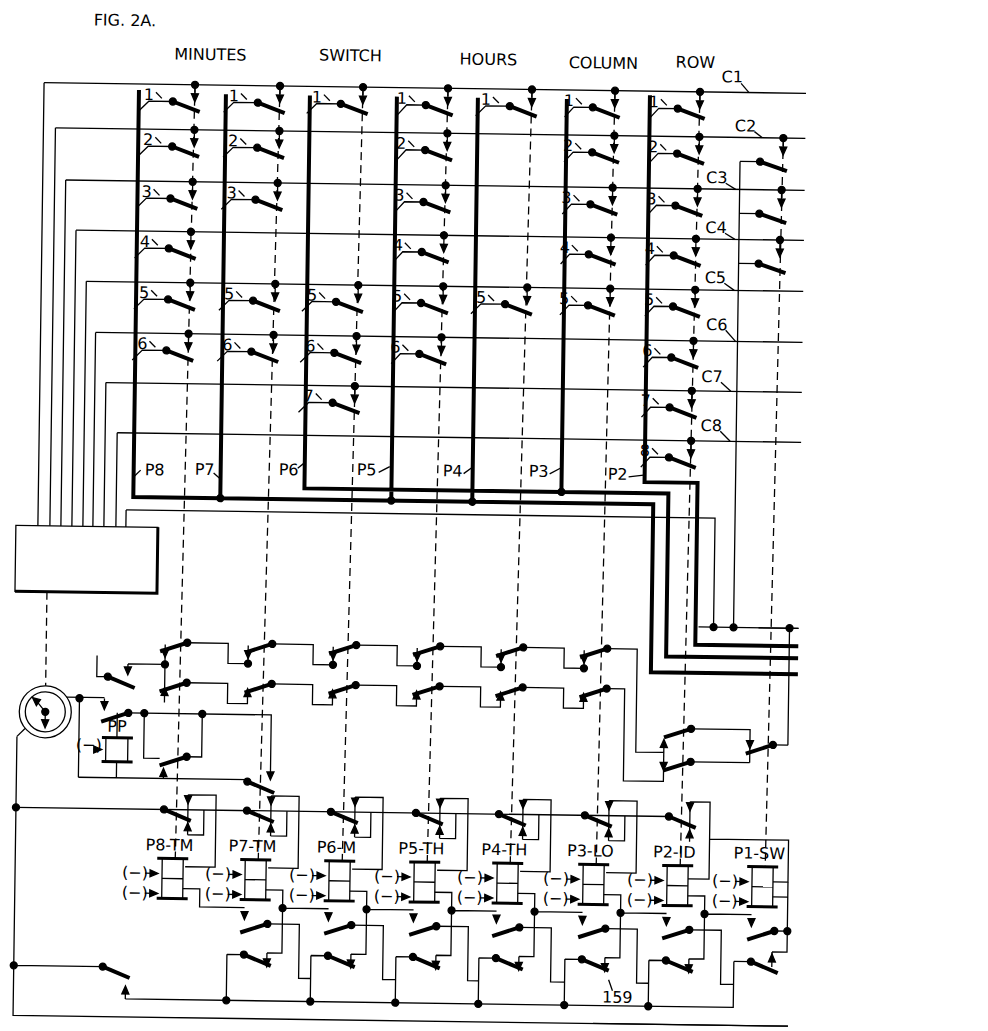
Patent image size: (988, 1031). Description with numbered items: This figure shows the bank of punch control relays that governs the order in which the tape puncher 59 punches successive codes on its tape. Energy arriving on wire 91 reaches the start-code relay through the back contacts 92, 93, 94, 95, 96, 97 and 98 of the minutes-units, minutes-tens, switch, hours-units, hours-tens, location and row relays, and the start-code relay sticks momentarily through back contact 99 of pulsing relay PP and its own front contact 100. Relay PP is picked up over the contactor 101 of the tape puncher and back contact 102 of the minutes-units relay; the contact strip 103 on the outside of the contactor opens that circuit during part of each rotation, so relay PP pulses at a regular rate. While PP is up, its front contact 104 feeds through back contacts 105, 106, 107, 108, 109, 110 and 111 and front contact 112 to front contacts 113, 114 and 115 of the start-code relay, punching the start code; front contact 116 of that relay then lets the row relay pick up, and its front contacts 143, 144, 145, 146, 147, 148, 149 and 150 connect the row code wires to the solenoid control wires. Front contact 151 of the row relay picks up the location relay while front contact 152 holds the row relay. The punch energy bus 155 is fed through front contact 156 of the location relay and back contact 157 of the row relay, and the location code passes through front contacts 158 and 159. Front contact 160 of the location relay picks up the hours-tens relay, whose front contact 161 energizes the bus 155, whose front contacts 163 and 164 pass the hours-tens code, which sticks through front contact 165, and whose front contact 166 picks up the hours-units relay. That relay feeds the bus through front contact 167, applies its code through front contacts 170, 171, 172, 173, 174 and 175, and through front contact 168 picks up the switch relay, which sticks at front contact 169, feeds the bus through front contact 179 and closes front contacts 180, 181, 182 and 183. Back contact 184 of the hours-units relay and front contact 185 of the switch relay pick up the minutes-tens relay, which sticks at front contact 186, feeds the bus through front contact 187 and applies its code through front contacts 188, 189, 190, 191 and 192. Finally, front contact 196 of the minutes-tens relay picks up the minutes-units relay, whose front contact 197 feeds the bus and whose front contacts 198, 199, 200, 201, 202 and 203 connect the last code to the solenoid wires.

The tape puncher 59 is at (140, 598).
The wire 91 is at (735, 1021).
The contact of relay P8-TM 92 is at (166, 810).
The contact of relay P7-TM 93 is at (249, 810).
The contact of relay P6-M 94 is at (333, 810).
The contact of relay P5-TH 95 is at (418, 810).
The contact of relay P4-TH 96 is at (501, 810).
The contact of relay P3-LO 97 is at (587, 810).
The contact of relay P2-ID 98 is at (671, 810).
The back contact of relay PP 99 is at (123, 977).
The front contact of relay P1-SW 100 is at (779, 979).
The contactor of the tape puncher 101 is at (52, 742).
The back contact of relay P8-TM 102 is at (194, 763).
The contact strip 103 is at (40, 696).
The front contact of relay PP 104 is at (116, 677).
The back contact of relay P8-TM 105 is at (191, 641).
The back contact of relay P7-TM 106 is at (276, 641).
The back contact of relay P6-M 107 is at (360, 641).
The back contact of relay P5-TH 108 is at (444, 641).
The back contact of relay P4-TH 109 is at (527, 641).
The back contact of relay P3-LO 110 is at (611, 641).
The back contact of relay P2-ID 111 is at (694, 721).
The contact of relay P1-SW 112 is at (778, 748).
The front contact of relay P1-SW 113 is at (767, 168).
The front contact of relay P1-SW 114 is at (767, 220).
The front contact of relay P1-SW 115 is at (767, 270).
The front contact of relay P1-SW 116 is at (760, 937).
The front contact of relay P2-ID 143 is at (703, 114).
The front contact of relay P2-ID 144 is at (674, 159).
The front contact of relay P2-ID 145 is at (673, 211).
The front contact of relay P2-ID 146 is at (672, 261).
The front contact of relay P2-ID 147 is at (672, 312).
The front contact of relay P2-ID 148 is at (671, 363).
The front contact of relay P2-ID 149 is at (670, 413).
The front contact of relay P2-ID 150 is at (699, 463).
The front contact of relay P2-ID 151 is at (675, 937).
The contact of relay P2-ID 152 is at (700, 977).
The punch energy bus 155 is at (786, 620).
The front contact of relay P3-LO 156 is at (610, 681).
The back contact of relay P2-ID 157 is at (700, 761).
The front contact of relay P3-LO 158 is at (589, 114).
The contact of relay P3-LO 159 is at (587, 312).
The front contact of relay P3-LO 160 is at (591, 937).
The contact of relay P4-TH 161 is at (526, 681).
The front contact of relay P4-TH 163 is at (506, 114).
The front contact of relay P4-TH 164 is at (504, 312).
The contact of relay P4-TH 165 is at (528, 977).
The front contact of relay P4-TH 166 is at (505, 937).
The front contact of relay P5-TH 167 is at (443, 681).
The front contact of relay P5-TH 168 is at (422, 937).
The contact of relay P6-M 169 is at (360, 977).
The front contact of relay P5-TH 170 is at (422, 114).
The front contact of relay P5-TH 171 is at (422, 159).
The front contact of relay P5-TH 172 is at (421, 211).
The front contact of relay P5-TH 173 is at (420, 261).
The front contact of relay P5-TH 174 is at (420, 312).
The front contact of relay P5-TH 175 is at (419, 363).
The contact of relay P6-M 179 is at (359, 681).
The front contact of relay P6-M 180 is at (337, 114).
The front contact of relay P6-M 181 is at (335, 312).
The front contact of relay P6-M 182 is at (334, 363).
The front contact of relay P6-M 183 is at (333, 413).
The back contact of relay P5-TH 184 is at (445, 977).
The front contact of relay P6-M 185 is at (337, 937).
The front contact of relay P7-TM 186 is at (265, 975).
The contact of relay P7-TM 187 is at (275, 681).
The front contact of relay P7-TM 188 is at (254, 114).
The front contact of relay P7-TM 189 is at (254, 159).
The front contact of relay P7-TM 190 is at (253, 211).
The front contact of relay P7-TM 191 is at (252, 312).
The front contact of relay P7-TM 192 is at (251, 363).
The front contact of relay P7-TM 196 is at (250, 930).
The front contact of relay P8-TM 197 is at (190, 681).
The front contact of relay P8-TM 198 is at (169, 114).
The front contact of relay P8-TM 199 is at (169, 159).
The front contact of relay P8-TM 200 is at (168, 211).
The front contact of relay P8-TM 201 is at (167, 261).
The front contact of relay P8-TM 202 is at (167, 312).
The front contact of relay P8-TM 203 is at (166, 363).